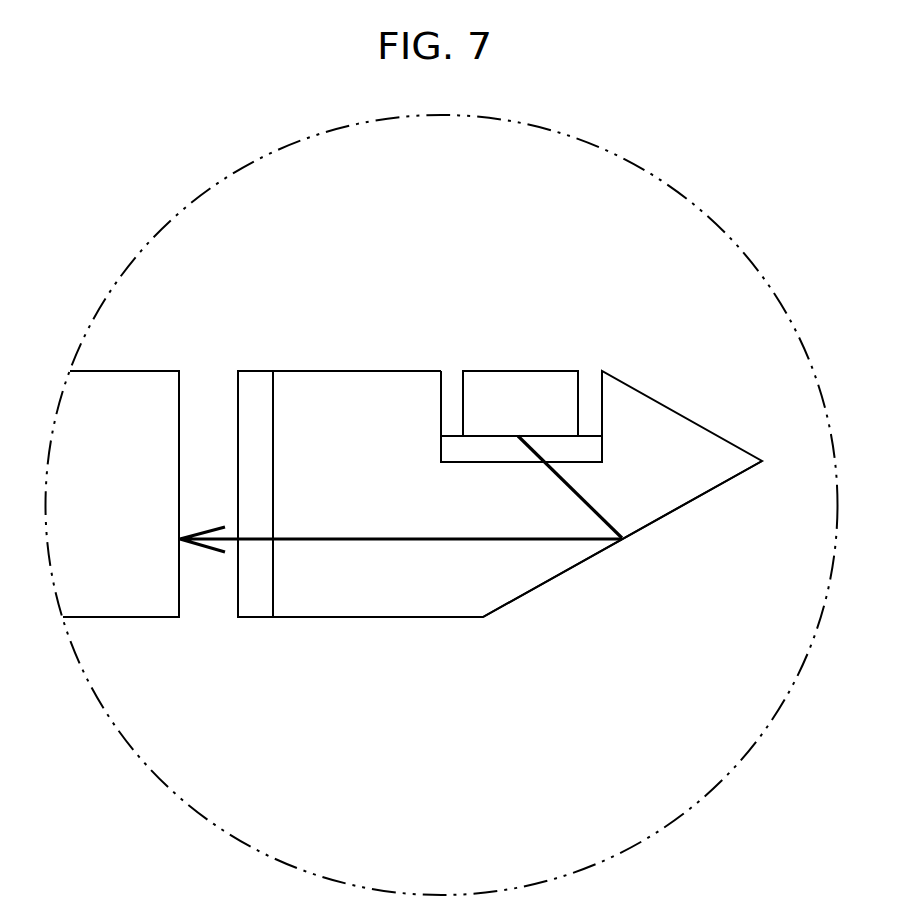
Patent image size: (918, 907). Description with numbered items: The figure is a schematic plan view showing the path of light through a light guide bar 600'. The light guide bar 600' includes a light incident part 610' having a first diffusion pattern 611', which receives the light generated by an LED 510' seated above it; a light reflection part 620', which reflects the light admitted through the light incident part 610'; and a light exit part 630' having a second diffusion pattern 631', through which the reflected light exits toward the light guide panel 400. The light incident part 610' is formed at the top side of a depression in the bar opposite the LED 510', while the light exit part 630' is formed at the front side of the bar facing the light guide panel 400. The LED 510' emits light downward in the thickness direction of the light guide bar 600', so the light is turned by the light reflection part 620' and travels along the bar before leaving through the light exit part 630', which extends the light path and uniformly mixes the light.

The light guide panel 400 is at (145, 387).
The LED 510' is at (520, 362).
The light incident part 610' is at (595, 384).
The first diffusion pattern 611' is at (595, 384).
The light reflection part 620' is at (630, 539).
The light exit part 630' is at (256, 538).
The second diffusion pattern 631' is at (256, 538).
The light guide bar 600' is at (471, 552).